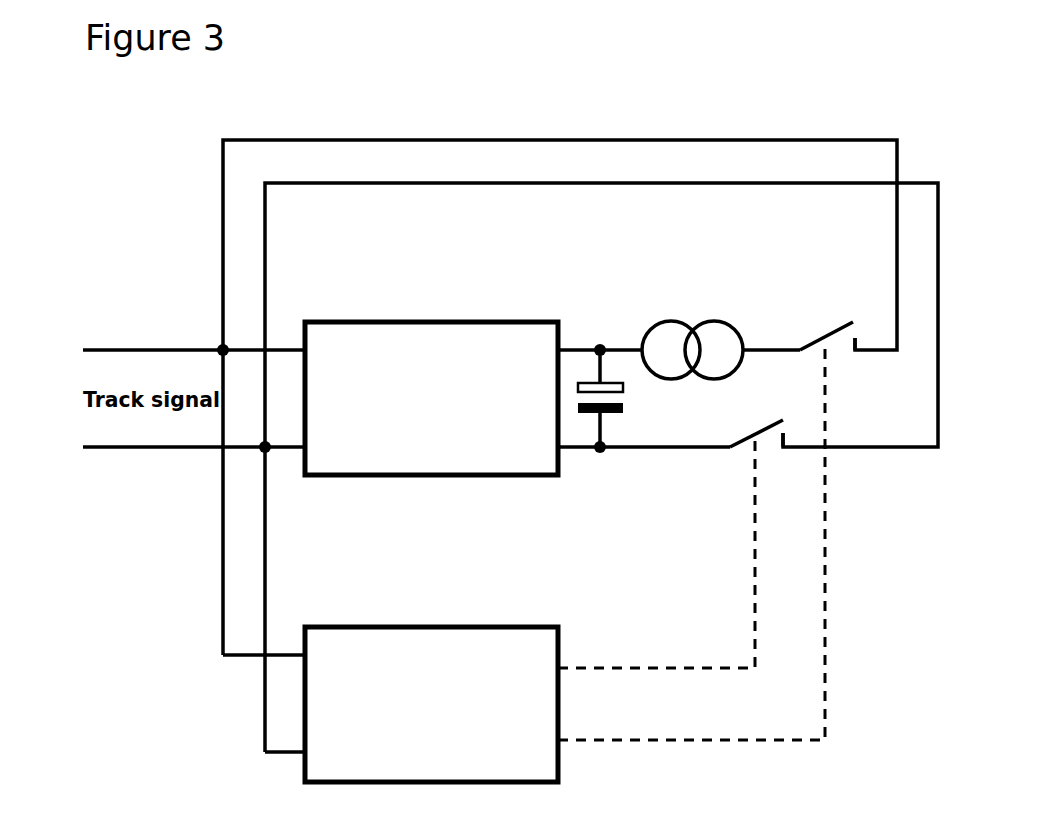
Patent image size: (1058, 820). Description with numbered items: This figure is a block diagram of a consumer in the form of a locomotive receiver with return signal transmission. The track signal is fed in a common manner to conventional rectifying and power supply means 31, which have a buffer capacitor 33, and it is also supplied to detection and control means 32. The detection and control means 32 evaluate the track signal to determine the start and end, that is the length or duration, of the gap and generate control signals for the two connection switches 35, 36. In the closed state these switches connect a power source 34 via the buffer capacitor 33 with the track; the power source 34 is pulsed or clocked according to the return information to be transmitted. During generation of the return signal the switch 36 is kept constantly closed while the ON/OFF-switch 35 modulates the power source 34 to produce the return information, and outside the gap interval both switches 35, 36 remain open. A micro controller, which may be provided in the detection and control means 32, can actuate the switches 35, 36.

The rectifying and power supply means 31 is at (333, 335).
The detection and control means 32 is at (333, 640).
The buffer capacitor 33 is at (585, 335).
The power source 34 is at (725, 335).
The ON/OFF-switch 35 is at (823, 335).
The switch 36 is at (742, 432).